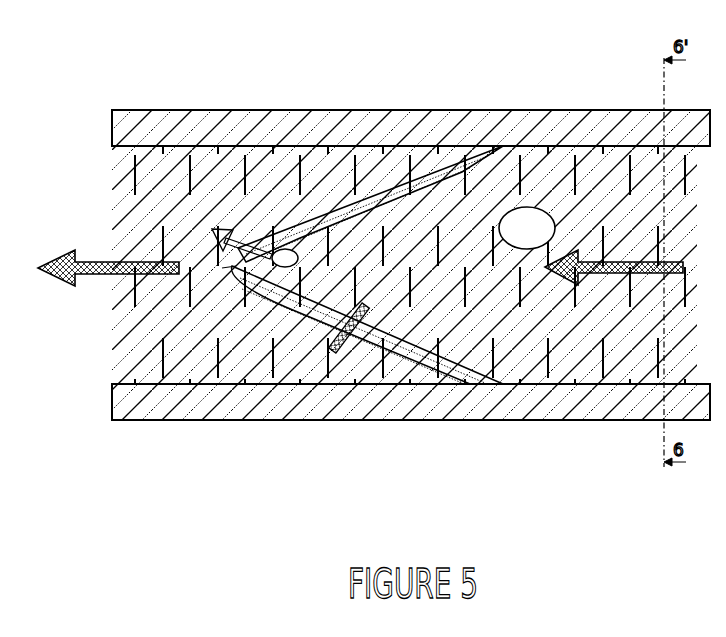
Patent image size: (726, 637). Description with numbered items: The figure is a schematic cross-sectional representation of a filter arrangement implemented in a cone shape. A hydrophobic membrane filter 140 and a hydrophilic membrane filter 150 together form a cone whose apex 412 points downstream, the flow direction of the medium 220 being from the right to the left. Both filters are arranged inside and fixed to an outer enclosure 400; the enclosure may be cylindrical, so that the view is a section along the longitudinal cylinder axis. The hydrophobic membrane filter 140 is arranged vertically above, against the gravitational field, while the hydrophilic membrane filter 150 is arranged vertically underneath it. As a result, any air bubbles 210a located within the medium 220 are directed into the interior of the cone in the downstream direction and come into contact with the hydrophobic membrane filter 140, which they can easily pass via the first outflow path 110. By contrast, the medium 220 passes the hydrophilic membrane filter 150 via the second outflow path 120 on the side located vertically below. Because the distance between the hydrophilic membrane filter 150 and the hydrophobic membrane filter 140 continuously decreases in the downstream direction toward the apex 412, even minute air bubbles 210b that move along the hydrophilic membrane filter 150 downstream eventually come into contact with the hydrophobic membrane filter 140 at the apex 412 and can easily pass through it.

The first outflow path 110 is at (226, 230).
The second outflow path 120 is at (350, 357).
The hydrophobic membrane filter 140 is at (380, 188).
The hydrophilic membrane filter 150 is at (447, 386).
The air bubble 210a is at (530, 215).
The air bubble 210b is at (283, 250).
The medium 220 is at (562, 378).
The outer enclosure 400 is at (584, 137).
The apex 412 is at (222, 268).